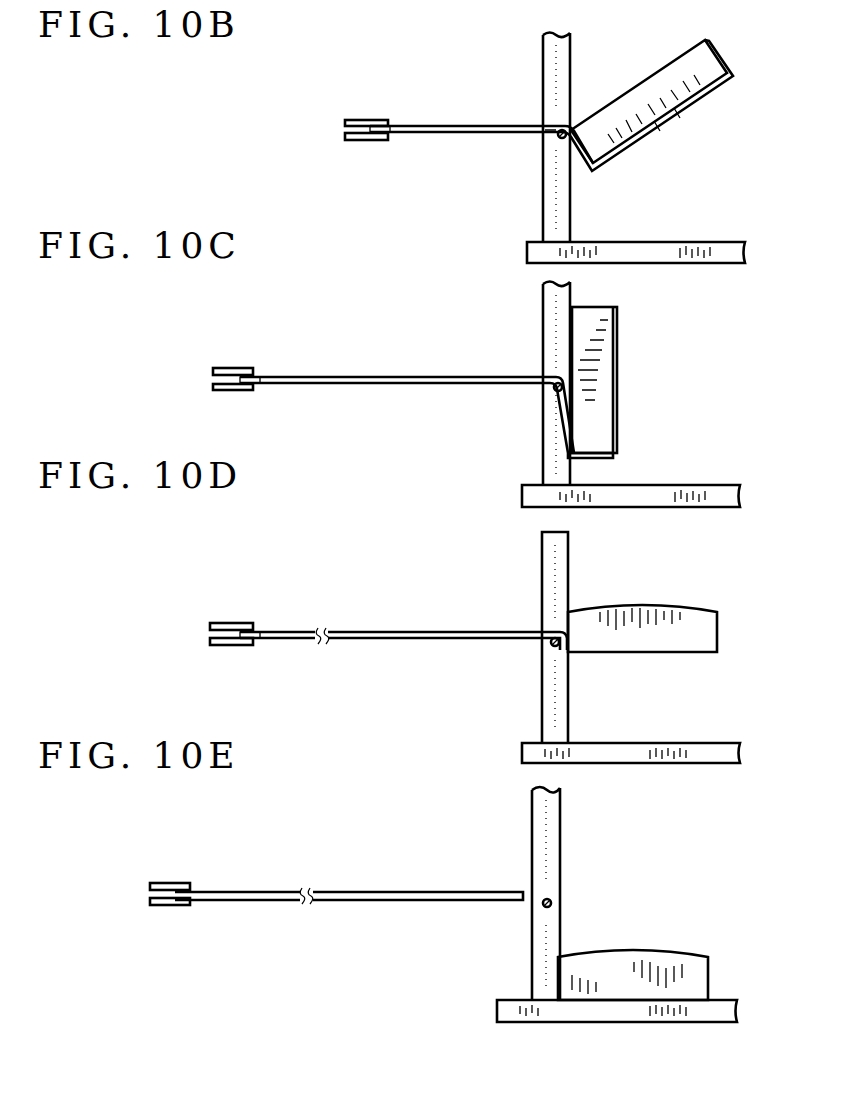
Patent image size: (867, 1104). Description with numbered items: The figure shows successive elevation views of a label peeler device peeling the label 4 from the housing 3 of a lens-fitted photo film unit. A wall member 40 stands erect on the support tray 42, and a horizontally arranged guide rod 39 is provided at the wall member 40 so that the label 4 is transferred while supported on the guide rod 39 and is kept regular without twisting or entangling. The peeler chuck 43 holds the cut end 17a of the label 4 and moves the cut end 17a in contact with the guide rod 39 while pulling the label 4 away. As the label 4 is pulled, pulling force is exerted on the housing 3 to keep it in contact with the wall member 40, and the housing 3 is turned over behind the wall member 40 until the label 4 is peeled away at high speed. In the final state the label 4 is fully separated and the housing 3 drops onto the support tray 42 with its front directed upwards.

In FIG. 10B, the housing 3 is at (647, 102).
In FIG. 10C, the housing 3 is at (610, 358).
In FIG. 10D, the housing 3 is at (643, 610).
In FIG. 10E, the housing 3 is at (638, 957).
In FIG. 10B, the label 4 is at (663, 123).
In FIG. 10C, the label 4 is at (375, 377).
In FIG. 10D, the label 4 is at (417, 632).
In FIG. 10E, the label 4 is at (397, 892).
In FIG. 10B, the cut end 17a is at (380, 142).
In FIG. 10C, the cut end 17a is at (247, 390).
In FIG. 10D, the cut end 17a is at (243, 647).
In FIG. 10B, the guide rod 39 is at (560, 138).
In FIG. 10C, the guide rod 39 is at (550, 390).
In FIG. 10D, the guide rod 39 is at (547, 650).
In FIG. 10E, the guide rod 39 is at (550, 898).
In FIG. 10B, the wall member 40 is at (557, 64).
In FIG. 10C, the wall member 40 is at (550, 309).
In FIG. 10D, the wall member 40 is at (550, 557).
In FIG. 10E, the wall member 40 is at (543, 933).
In FIG. 10B, the support tray 42 is at (710, 250).
In FIG. 10C, the support tray 42 is at (715, 485).
In FIG. 10D, the support tray 42 is at (700, 743).
In FIG. 10E, the support tray 42 is at (640, 1023).
In FIG. 10B, the peeler chuck 43 is at (350, 142).
In FIG. 10C, the peeler chuck 43 is at (237, 367).
In FIG. 10D, the peeler chuck 43 is at (237, 623).
In FIG. 10E, the peeler chuck 43 is at (167, 907).